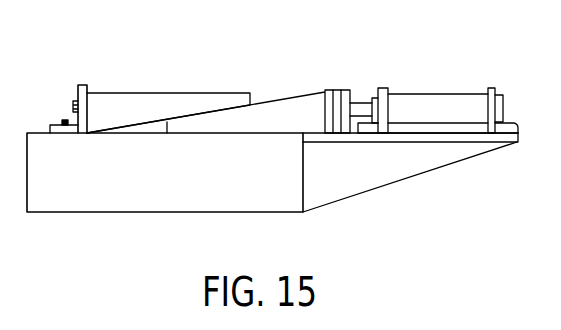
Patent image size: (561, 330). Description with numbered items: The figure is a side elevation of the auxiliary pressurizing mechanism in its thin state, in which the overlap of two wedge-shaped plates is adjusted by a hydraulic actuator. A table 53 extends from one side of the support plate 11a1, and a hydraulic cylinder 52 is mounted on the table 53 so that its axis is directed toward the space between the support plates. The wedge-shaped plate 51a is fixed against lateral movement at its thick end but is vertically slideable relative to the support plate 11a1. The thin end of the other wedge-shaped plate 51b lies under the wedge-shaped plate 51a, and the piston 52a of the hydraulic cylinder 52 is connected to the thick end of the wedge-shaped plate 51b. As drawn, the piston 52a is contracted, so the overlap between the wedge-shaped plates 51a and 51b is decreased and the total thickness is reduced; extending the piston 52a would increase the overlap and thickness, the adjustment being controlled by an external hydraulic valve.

The support plate 11a1 is at (143, 212).
The wedge-shaped plate 51a is at (178, 93).
The wedge-shaped plate 51b is at (303, 93).
The piston 52a is at (365, 95).
The hydraulic cylinder 52 is at (453, 93).
The table 53 is at (425, 173).